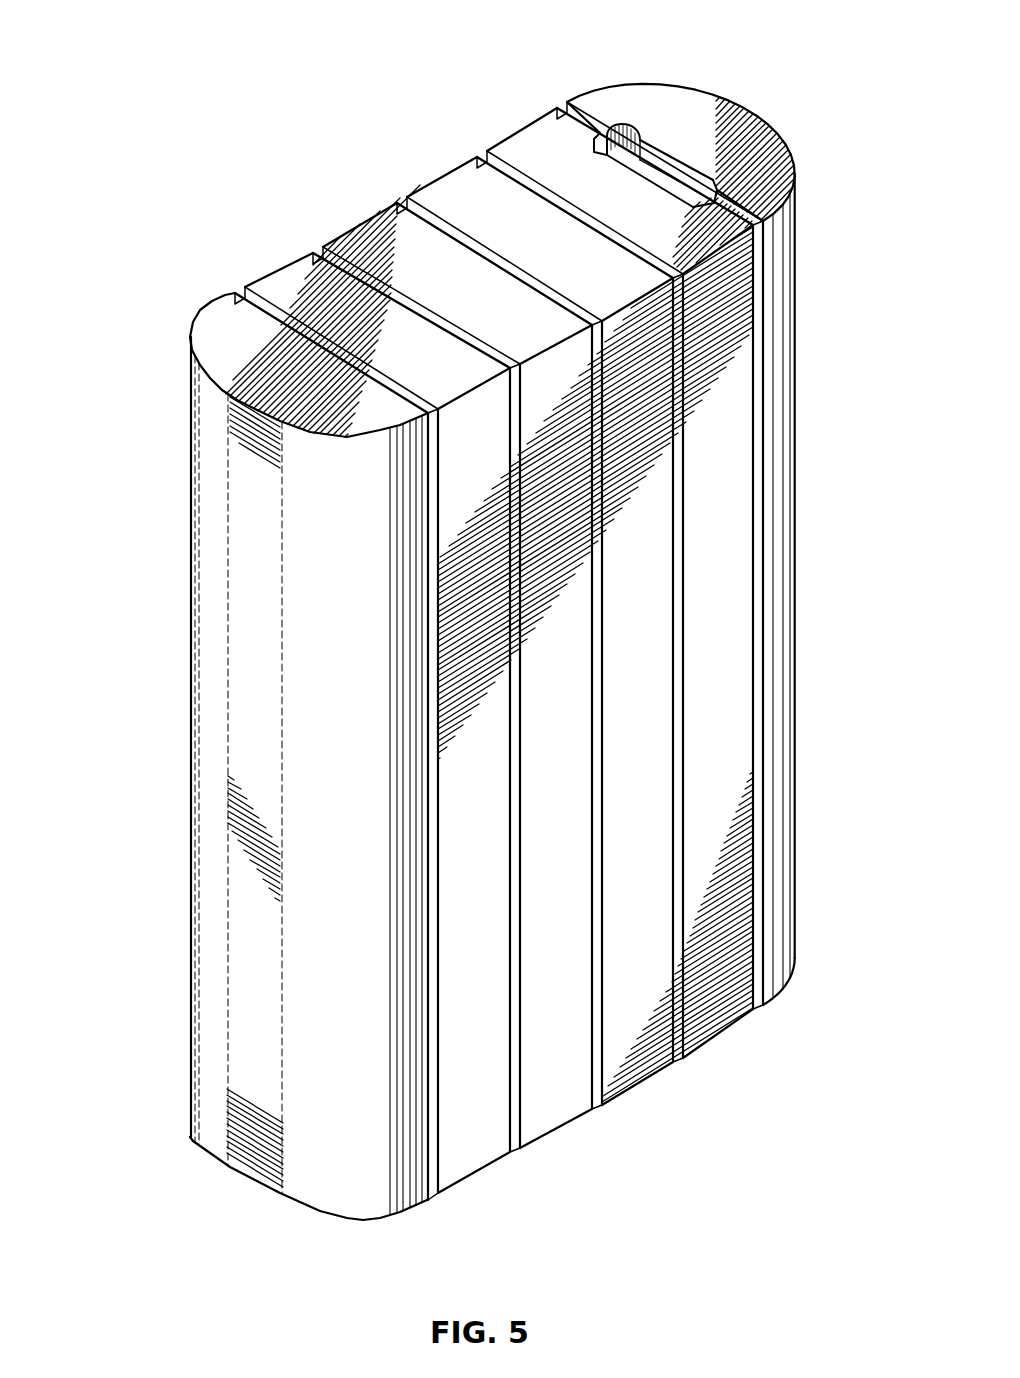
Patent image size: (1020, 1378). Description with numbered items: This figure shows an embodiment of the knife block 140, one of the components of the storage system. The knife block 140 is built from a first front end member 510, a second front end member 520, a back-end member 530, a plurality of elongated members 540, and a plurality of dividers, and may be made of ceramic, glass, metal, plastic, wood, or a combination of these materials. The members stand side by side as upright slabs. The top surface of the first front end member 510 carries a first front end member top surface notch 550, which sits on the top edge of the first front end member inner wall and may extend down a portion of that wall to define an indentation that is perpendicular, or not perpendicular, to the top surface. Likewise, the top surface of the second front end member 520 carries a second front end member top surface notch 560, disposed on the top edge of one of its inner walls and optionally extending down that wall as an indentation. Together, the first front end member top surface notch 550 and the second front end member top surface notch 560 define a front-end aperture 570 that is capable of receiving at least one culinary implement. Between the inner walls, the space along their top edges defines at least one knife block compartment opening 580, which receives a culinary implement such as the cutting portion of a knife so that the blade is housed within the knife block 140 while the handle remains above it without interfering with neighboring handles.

The knife block 140 is at (166, 143).
The first front end member 510 is at (730, 98).
The second front end member 520 is at (500, 138).
The back-end member 530 is at (196, 322).
The plurality of elongated members 540 is at (623, 307).
The first front end member top surface notch 550 is at (620, 125).
The second front end member top surface notch 560 is at (700, 203).
The front-end aperture 570 is at (639, 159).
The knife block compartment opening 580 is at (477, 157).